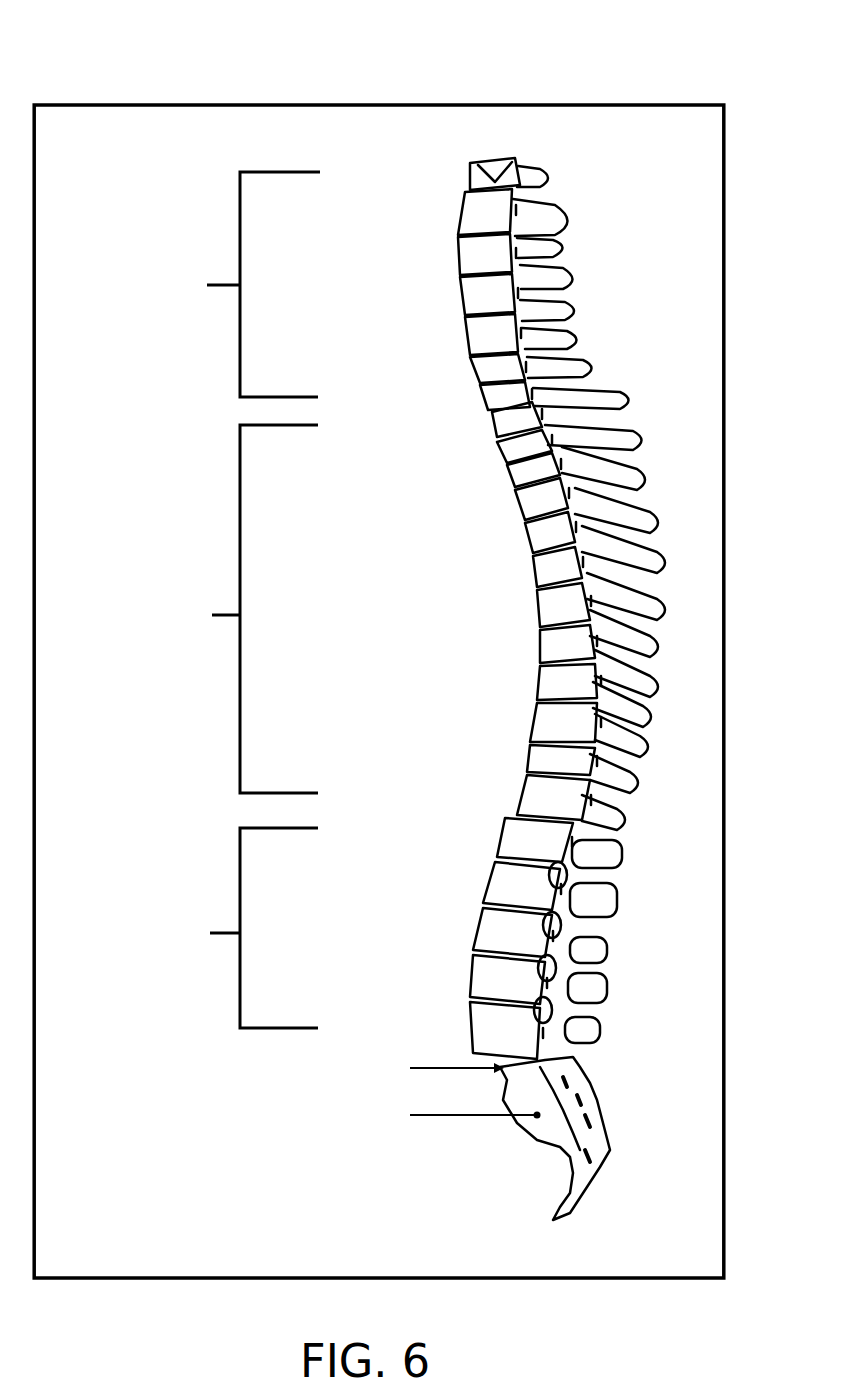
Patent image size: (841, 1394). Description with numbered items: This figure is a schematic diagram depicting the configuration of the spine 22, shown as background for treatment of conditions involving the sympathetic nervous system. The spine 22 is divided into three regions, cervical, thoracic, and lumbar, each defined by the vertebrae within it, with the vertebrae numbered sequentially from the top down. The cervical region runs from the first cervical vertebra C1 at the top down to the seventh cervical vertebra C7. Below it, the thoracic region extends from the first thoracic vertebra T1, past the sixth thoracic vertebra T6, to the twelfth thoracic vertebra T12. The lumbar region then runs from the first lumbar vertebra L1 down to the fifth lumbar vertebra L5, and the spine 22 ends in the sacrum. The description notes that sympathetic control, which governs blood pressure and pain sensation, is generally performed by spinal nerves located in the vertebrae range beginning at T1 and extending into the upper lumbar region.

The spine 22 is at (640, 72).
The first cervical vertebra C1 is at (477, 176).
The seventh cervical vertebra C7 is at (497, 396).
The first thoracic vertebra T1 is at (498, 427).
The sixth thoracic vertebra T6 is at (550, 584).
The twelfth thoracic vertebra T12 is at (530, 793).
The first lumbar vertebra L1 is at (522, 830).
The fifth lumbar vertebra L5 is at (487, 1026).